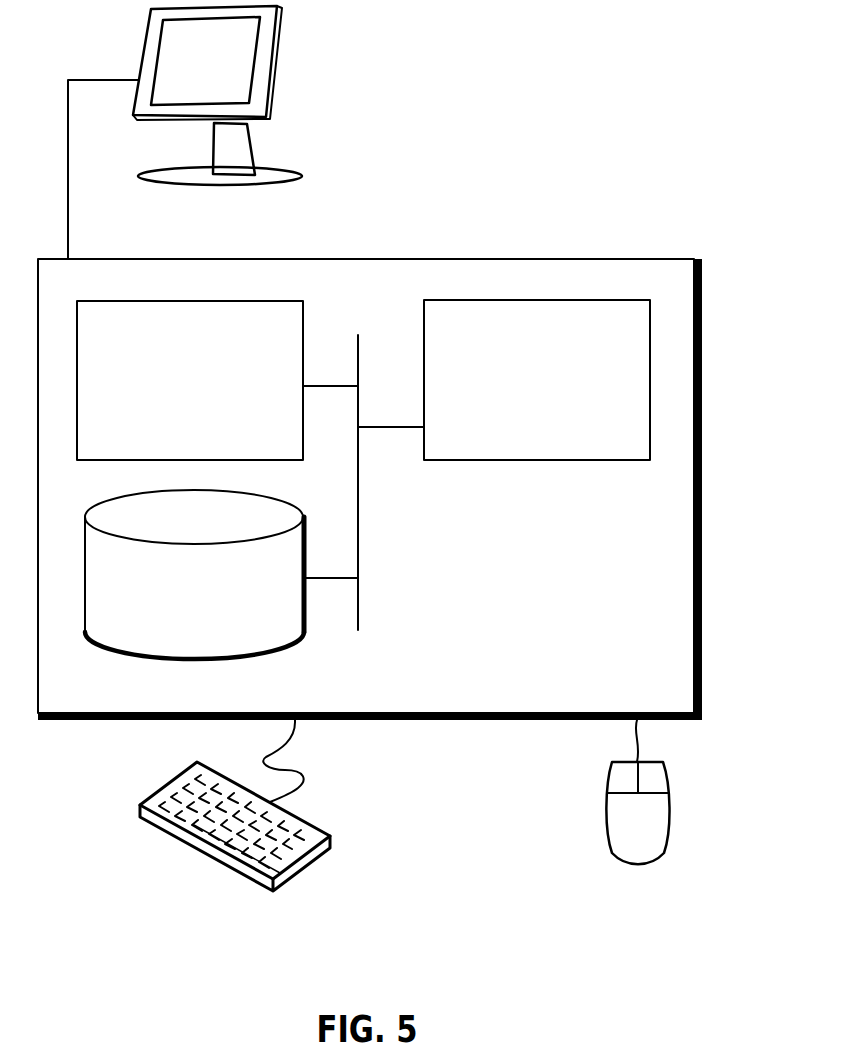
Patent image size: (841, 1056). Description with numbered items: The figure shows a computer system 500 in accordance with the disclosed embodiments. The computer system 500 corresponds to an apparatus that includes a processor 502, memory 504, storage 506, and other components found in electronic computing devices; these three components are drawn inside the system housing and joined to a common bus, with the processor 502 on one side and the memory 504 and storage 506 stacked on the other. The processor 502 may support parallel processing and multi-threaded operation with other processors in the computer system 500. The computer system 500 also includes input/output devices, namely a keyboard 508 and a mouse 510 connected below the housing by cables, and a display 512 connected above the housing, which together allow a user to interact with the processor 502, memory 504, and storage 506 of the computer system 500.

The computer system 500 is at (413, 237).
The processor 502 is at (518, 393).
The memory 504 is at (167, 392).
The storage 506 is at (175, 604).
The keyboard 508 is at (161, 822).
The mouse 510 is at (616, 834).
The display 512 is at (217, 110).